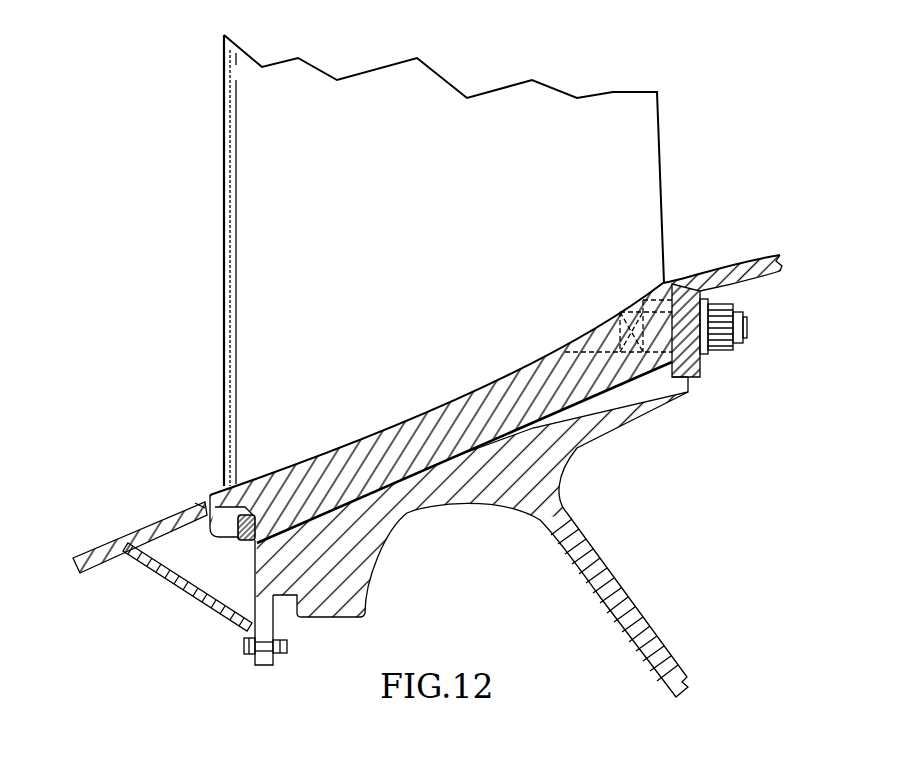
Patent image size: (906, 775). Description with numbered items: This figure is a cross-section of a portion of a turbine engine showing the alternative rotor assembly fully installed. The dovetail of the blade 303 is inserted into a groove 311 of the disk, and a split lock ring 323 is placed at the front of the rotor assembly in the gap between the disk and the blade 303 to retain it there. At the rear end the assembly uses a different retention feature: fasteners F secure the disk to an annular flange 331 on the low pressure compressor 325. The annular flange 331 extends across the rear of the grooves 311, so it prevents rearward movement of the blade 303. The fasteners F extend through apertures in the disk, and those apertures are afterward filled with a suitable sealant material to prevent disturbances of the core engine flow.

The blade 303 is at (453, 219).
The groove 311 is at (535, 429).
The split lock ring 323 is at (247, 541).
The low pressure compressor 325 is at (713, 268).
The annular flange 331 is at (693, 378).
The fastener F is at (747, 322).